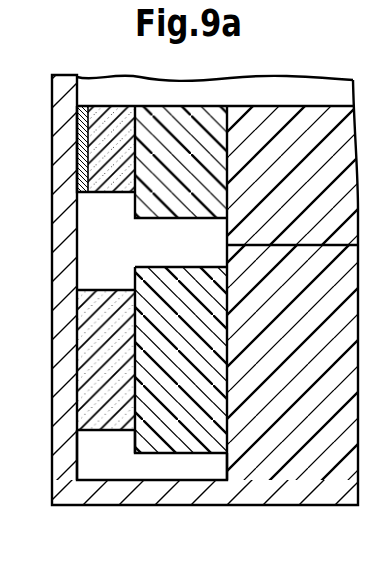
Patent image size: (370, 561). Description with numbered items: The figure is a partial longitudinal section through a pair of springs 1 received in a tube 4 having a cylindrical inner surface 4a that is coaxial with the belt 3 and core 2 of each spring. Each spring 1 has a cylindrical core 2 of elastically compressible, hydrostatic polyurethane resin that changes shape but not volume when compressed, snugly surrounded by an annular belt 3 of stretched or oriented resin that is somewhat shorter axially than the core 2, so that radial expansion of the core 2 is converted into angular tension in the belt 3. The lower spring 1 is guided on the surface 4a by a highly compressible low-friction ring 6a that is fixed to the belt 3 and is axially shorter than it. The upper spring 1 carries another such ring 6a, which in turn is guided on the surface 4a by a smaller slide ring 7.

The spring 1 is at (273, 96).
The cylindrical core 2 is at (285, 442).
The annular belt 3 is at (183, 432).
The tube 4 is at (68, 317).
The cylindrical inner surface 4a is at (78, 452).
The low-friction ring 6a is at (106, 105).
The slide ring 7 is at (84, 152).